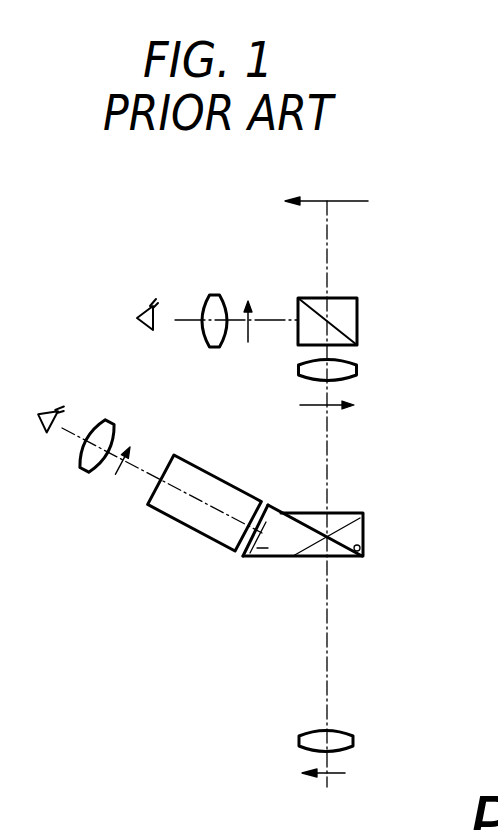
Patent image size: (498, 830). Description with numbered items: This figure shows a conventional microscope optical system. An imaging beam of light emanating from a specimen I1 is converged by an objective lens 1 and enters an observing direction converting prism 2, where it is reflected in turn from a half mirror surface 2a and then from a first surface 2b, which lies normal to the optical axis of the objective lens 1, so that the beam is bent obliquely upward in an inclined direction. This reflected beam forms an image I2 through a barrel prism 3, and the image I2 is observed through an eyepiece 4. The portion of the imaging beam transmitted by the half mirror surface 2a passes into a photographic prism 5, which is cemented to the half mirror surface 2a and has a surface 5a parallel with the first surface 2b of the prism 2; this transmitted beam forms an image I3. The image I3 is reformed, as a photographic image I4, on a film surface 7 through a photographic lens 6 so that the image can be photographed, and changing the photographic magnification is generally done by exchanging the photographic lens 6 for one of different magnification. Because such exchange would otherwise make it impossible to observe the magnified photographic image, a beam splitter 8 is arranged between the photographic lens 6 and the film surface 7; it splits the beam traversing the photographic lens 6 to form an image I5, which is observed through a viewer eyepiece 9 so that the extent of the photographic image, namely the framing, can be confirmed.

The objective lens 1 is at (345, 730).
The observing direction converting prism 2 is at (250, 555).
The half mirror surface 2a is at (360, 550).
The first surface 2b is at (273, 556).
The barrel prism 3 is at (210, 480).
The eyepiece 4 is at (117, 423).
The photographic prism 5 is at (329, 509).
The surface 5a is at (342, 513).
The photographic lens 6 is at (357, 370).
The film surface 7 is at (348, 197).
The beam splitter 8 is at (352, 320).
The viewer eyepiece 9 is at (213, 295).
The specimen I1 is at (302, 772).
The image I2 is at (131, 449).
The image I3 is at (338, 407).
The photographic image I4 is at (389, 207).
The image I5 is at (252, 307).